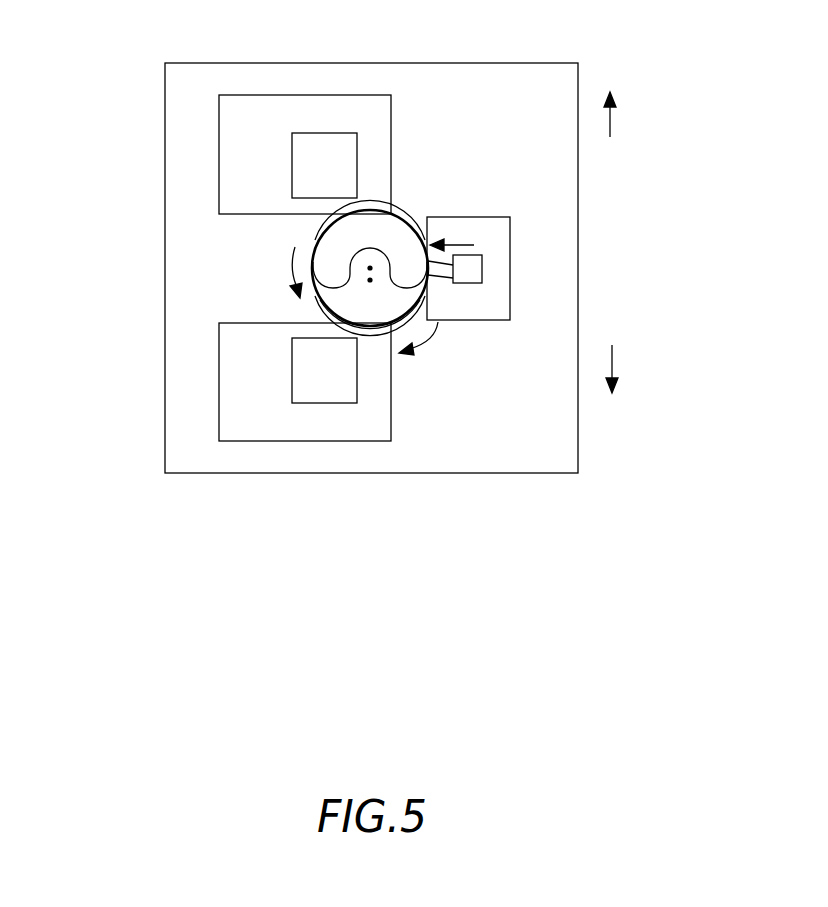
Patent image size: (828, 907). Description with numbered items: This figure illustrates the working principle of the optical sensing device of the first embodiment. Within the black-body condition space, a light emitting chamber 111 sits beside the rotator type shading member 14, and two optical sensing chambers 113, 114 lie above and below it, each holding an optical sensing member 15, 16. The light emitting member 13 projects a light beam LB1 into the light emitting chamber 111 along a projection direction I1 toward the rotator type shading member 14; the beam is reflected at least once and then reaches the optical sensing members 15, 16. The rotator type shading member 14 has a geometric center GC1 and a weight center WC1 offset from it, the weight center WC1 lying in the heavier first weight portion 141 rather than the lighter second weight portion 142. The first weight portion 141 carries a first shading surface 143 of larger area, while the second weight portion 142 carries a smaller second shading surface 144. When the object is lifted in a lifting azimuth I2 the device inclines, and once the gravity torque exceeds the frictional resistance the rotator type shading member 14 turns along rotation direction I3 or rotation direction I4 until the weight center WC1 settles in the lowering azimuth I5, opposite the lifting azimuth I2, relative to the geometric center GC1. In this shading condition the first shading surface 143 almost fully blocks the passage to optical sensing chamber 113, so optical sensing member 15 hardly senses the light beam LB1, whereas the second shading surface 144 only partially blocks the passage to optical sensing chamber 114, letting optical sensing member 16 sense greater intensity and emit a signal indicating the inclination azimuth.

The light emitting chamber 111 is at (508, 217).
The optical sensing chamber 113 is at (260, 412).
The optical sensing chamber 114 is at (237, 155).
The light emitting member 13 is at (475, 272).
The rotator type shading member 14 is at (408, 222).
The first weight portion 141 is at (348, 306).
The second weight portion 142 is at (330, 250).
The first shading surface 143 is at (368, 326).
The second shading surface 144 is at (383, 211).
The optical sensing member 15 is at (333, 385).
The optical sensing member 16 is at (315, 147).
The geometric center GC1 is at (370, 265).
The weight center WC1 is at (371, 283).
The light beam LB1 is at (432, 274).
The projection direction I1 is at (452, 235).
The lifting azimuth I2 is at (610, 132).
The rotation direction I3 is at (281, 272).
The rotation direction I4 is at (419, 348).
The lowering azimuth I5 is at (612, 354).